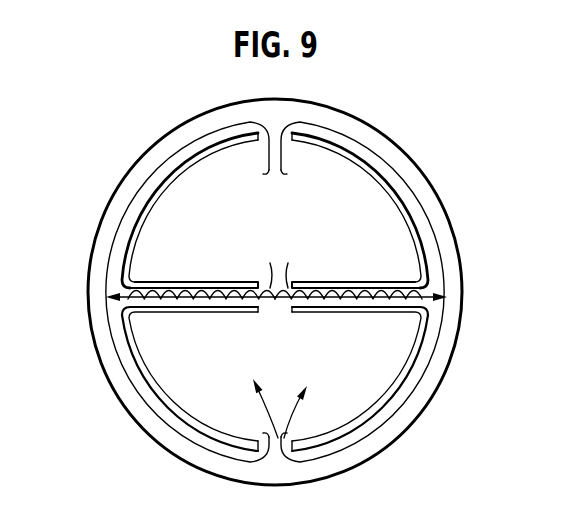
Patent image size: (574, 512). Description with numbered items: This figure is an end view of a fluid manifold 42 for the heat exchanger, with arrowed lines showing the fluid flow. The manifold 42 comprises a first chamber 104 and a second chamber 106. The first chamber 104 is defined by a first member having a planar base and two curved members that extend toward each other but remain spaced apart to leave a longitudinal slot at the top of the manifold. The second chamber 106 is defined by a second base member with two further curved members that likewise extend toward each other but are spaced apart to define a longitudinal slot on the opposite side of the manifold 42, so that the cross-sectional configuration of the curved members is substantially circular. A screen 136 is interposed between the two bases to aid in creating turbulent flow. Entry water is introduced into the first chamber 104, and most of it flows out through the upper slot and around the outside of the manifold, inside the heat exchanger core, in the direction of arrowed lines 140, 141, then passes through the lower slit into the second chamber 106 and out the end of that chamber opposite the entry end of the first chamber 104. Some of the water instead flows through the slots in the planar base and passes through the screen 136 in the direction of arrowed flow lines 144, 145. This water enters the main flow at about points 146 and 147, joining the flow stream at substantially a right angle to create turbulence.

The manifold 42 is at (80, 351).
The first chamber 104 is at (280, 210).
The second chamber 106 is at (291, 367).
The screen 136 is at (226, 287).
The arrowed line 140 is at (157, 187).
The arrowed line 141 is at (387, 183).
The arrowed flow line 144 is at (187, 297).
The arrowed flow line 145 is at (392, 290).
The point 146 is at (104, 299).
The point 147 is at (455, 295).